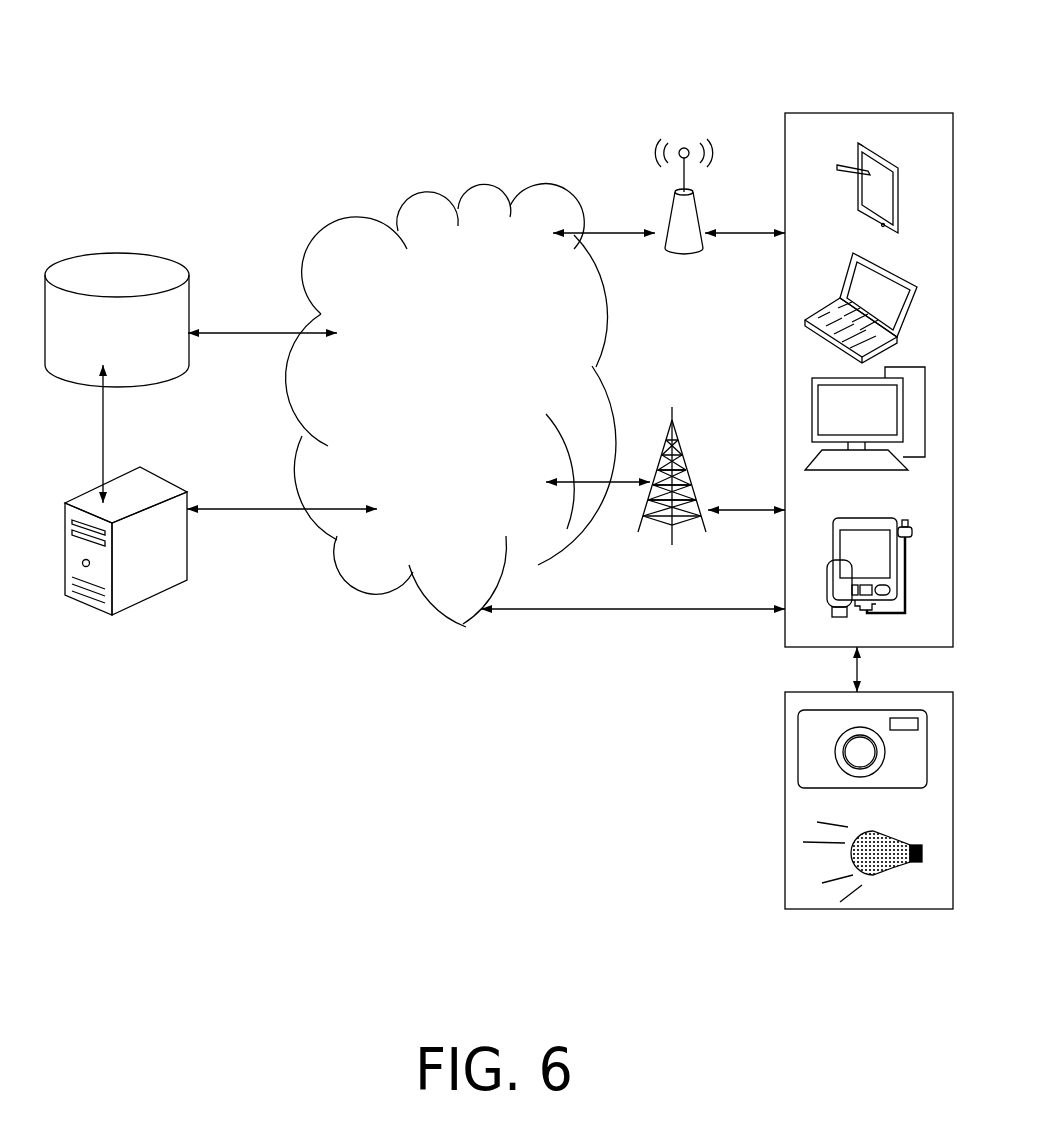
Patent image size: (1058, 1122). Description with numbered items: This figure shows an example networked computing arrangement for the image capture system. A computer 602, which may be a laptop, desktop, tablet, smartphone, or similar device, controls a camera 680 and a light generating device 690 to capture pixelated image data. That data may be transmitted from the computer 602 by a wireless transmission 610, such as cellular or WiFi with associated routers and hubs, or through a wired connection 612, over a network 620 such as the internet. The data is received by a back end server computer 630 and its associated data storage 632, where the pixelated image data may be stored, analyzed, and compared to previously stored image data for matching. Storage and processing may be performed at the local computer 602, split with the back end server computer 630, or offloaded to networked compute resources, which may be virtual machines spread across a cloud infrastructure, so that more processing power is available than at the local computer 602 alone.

The computer 602 is at (860, 122).
The wireless transmission 610 is at (700, 253).
The wired connection 612 is at (680, 610).
The network 620 is at (457, 603).
The back end server computer 630 is at (167, 590).
The data storage 632 is at (113, 272).
The camera 680 is at (815, 742).
The light generating device 690 is at (850, 853).